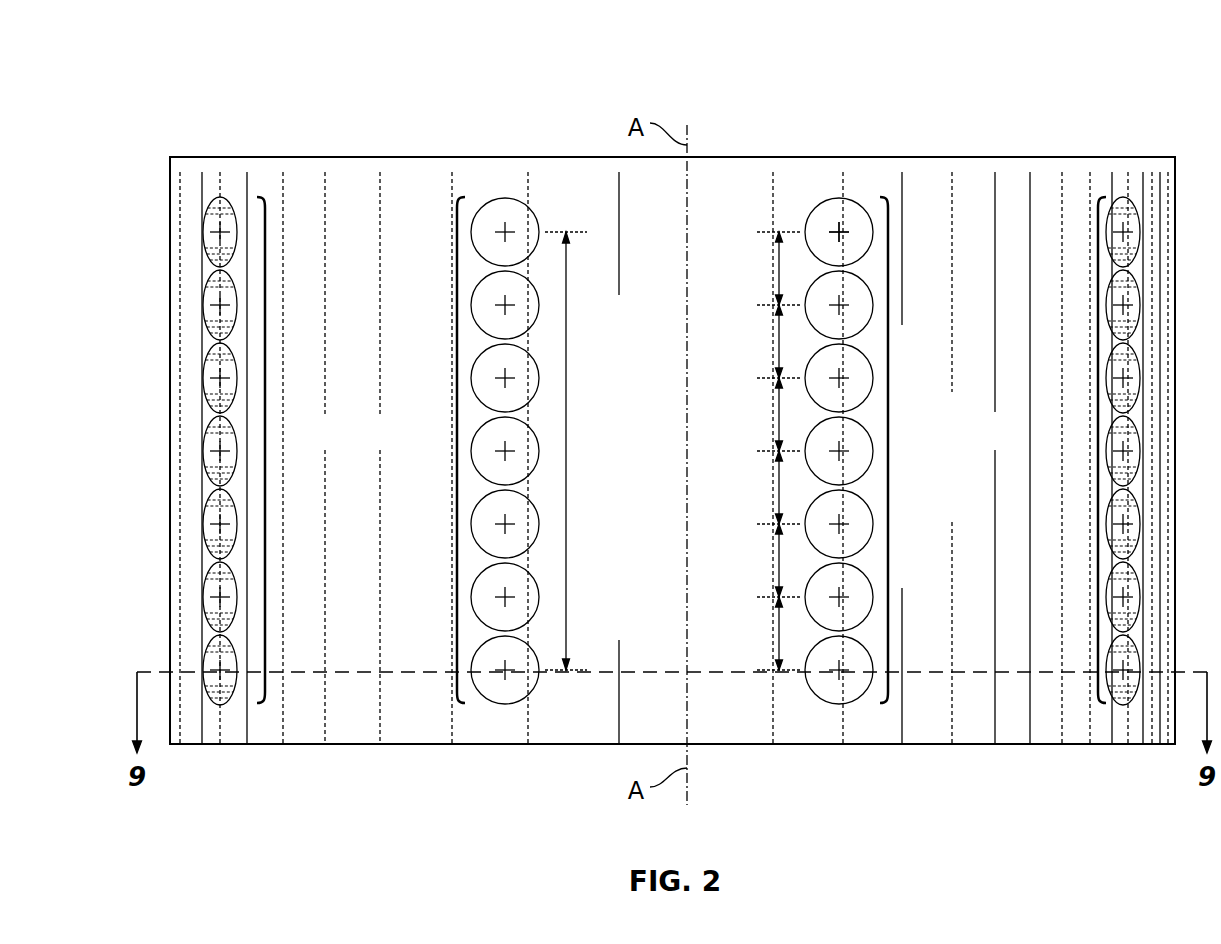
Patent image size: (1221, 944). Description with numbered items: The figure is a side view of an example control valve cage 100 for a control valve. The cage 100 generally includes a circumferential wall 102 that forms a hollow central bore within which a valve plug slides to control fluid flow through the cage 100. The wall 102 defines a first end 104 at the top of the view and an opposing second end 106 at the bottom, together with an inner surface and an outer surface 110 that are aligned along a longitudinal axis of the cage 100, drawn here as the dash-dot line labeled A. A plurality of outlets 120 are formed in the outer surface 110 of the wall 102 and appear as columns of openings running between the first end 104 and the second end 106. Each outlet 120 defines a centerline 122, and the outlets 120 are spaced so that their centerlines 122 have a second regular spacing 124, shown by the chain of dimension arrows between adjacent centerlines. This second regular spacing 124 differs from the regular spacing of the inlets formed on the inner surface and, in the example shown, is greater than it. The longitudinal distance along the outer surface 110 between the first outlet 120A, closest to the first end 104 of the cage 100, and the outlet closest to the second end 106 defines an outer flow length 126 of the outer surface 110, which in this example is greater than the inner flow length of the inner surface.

The cage 100 is at (390, 85).
The circumferential wall 102 is at (931, 172).
The first end 104 is at (487, 157).
The second end 106 is at (562, 745).
The outer surface 110 is at (170, 350).
The outlets 120 is at (457, 452).
The first outlet 120A is at (503, 198).
The centerline 122 is at (833, 218).
The second regular spacing 124 is at (779, 268).
The outer flow length 126 is at (566, 450).